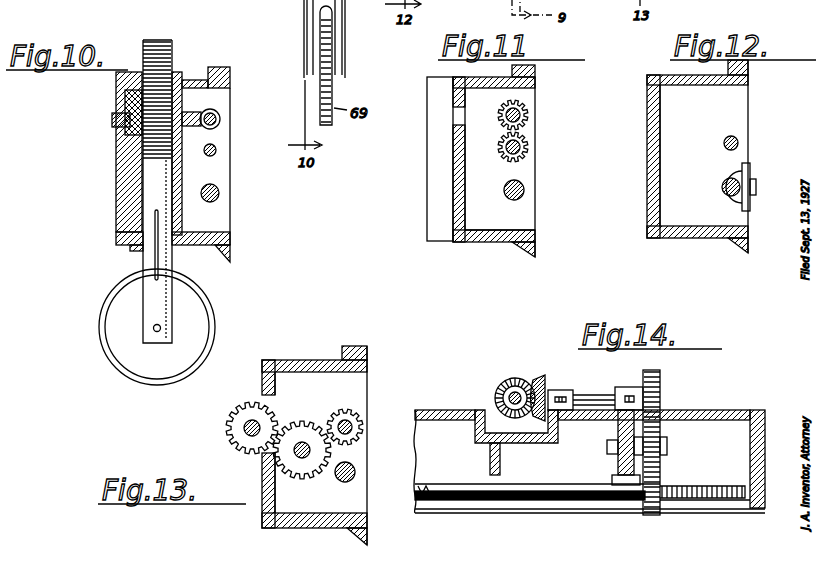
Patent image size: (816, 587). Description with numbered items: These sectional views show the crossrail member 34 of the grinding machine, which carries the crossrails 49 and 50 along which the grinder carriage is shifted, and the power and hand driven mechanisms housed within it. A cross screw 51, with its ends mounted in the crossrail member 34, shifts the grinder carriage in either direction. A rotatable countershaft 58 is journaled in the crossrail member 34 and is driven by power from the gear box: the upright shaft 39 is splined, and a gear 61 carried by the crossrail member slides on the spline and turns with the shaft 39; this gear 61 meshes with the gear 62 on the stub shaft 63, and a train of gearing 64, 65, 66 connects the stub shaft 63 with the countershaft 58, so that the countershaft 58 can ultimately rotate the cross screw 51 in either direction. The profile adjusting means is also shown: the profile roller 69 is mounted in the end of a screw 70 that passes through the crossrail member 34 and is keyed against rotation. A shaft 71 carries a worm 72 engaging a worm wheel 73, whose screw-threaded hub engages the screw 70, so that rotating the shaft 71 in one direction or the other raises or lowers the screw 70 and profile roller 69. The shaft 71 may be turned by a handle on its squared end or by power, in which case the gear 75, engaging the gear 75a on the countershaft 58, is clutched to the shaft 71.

In FIG. 10, the crossrail member 34 is at (116, 222).
In FIG. 11, the crossrail member 34 is at (453, 214).
In FIG. 12, the crossrail member 34 is at (648, 181).
In FIG. 13, the crossrail member 34 is at (278, 362).
In FIG. 14, the crossrail member 34 is at (458, 410).
In FIG. 10, the crossrail 49 is at (219, 70).
In FIG. 11, the crossrail 49 is at (536, 70).
In FIG. 12, the crossrail 49 is at (750, 70).
In FIG. 13, the crossrail 49 is at (352, 350).
In FIG. 10, the crossrail 50 is at (225, 250).
In FIG. 11, the crossrail 50 is at (527, 255).
In FIG. 12, the crossrail 50 is at (740, 250).
In FIG. 13, the crossrail 50 is at (355, 529).
In FIG. 10, the cross screw 51 is at (220, 193).
In FIG. 11, the cross screw 51 is at (526, 190).
In FIG. 12, the cross screw 51 is at (745, 198).
In FIG. 13, the cross screw 51 is at (346, 484).
In FIG. 14, the cross screw 51 is at (708, 487).
In FIG. 10, the countershaft 58 is at (216, 154).
In FIG. 11, the countershaft 58 is at (522, 147).
In FIG. 12, the countershaft 58 is at (739, 143).
In FIG. 13, the countershaft 58 is at (353, 420).
In FIG. 14, the countershaft 58 is at (450, 492).
In FIG. 10, the profile roller 69 is at (100, 327).
In FIG. 10, the screw 70 is at (150, 170).
In FIG. 10, the shaft 71 is at (222, 121).
In FIG. 11, the shaft 71 is at (505, 115).
In FIG. 10, the worm 72 is at (222, 110).
In FIG. 10, the worm wheel 73 is at (112, 120).
In FIG. 11, the gear 75 is at (526, 108).
In FIG. 11, the gear 75a is at (500, 158).
In FIG. 13, the stub shaft 63 is at (244, 428).
In FIG. 14, the stub shaft 63 is at (595, 392).
In FIG. 13, the gear 64 is at (236, 408).
In FIG. 14, the gear 64 is at (661, 387).
In FIG. 13, the gear 65 is at (314, 402).
In FIG. 14, the gear 65 is at (667, 446).
In FIG. 13, the gear 66 is at (362, 443).
In FIG. 14, the shaft 39 is at (505, 382).
In FIG. 14, the gear 61 is at (522, 381).
In FIG. 14, the gear 62 is at (546, 384).